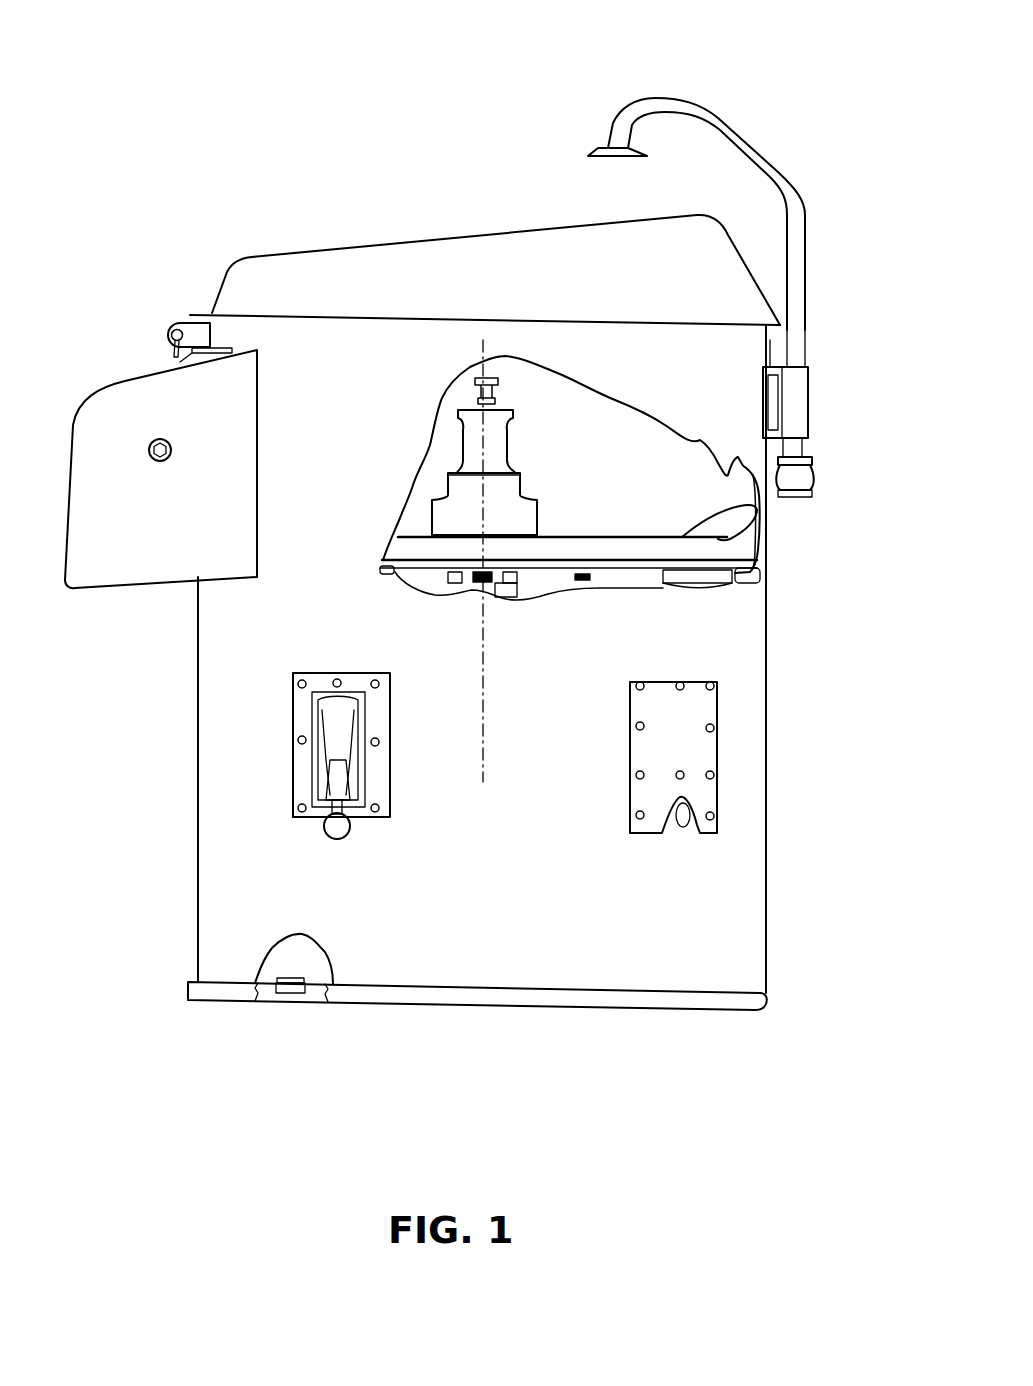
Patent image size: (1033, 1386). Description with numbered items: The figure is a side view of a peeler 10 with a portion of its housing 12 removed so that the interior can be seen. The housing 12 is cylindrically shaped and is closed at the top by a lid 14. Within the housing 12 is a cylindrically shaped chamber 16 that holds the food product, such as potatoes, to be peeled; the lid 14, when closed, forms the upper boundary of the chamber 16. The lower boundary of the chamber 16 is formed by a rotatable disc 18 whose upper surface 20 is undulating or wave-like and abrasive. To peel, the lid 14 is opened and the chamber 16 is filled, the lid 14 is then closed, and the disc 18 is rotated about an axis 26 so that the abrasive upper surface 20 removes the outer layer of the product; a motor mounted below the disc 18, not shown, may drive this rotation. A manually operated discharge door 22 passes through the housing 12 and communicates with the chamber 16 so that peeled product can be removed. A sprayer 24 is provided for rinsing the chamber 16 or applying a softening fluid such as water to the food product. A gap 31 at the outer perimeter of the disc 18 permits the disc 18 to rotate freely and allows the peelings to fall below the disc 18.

The peeler 10 is at (222, 123).
The housing 12 is at (196, 720).
The lid 14 is at (476, 241).
The chamber 16 is at (548, 405).
The rotatable disc 18 is at (738, 552).
The upper surface 20 is at (716, 520).
The discharge door 22 is at (135, 438).
The sprayer 24 is at (675, 97).
The axis 26 is at (484, 742).
The gap 31 is at (753, 500).